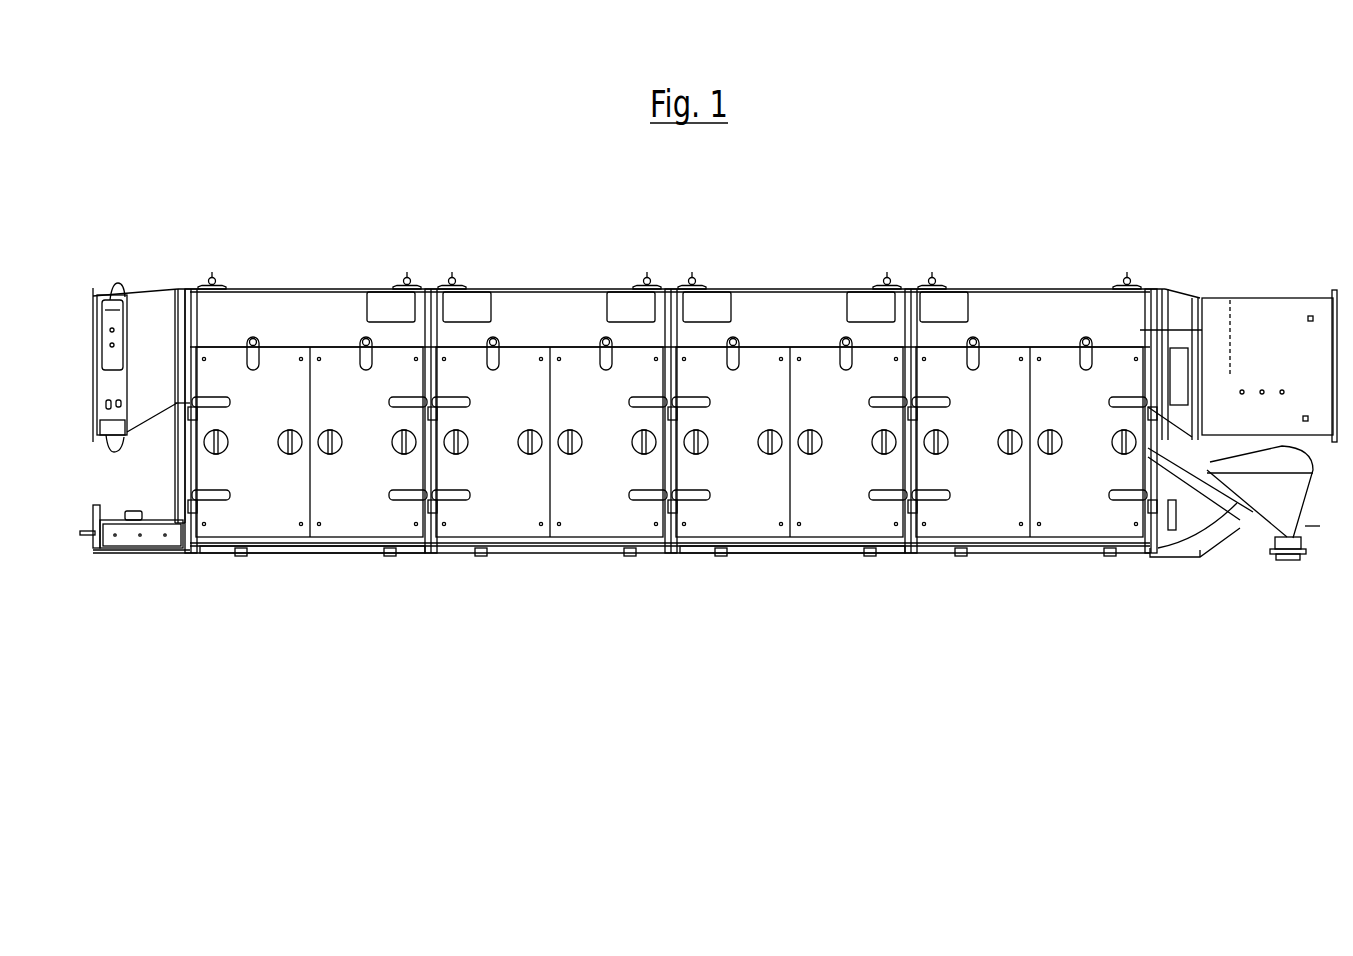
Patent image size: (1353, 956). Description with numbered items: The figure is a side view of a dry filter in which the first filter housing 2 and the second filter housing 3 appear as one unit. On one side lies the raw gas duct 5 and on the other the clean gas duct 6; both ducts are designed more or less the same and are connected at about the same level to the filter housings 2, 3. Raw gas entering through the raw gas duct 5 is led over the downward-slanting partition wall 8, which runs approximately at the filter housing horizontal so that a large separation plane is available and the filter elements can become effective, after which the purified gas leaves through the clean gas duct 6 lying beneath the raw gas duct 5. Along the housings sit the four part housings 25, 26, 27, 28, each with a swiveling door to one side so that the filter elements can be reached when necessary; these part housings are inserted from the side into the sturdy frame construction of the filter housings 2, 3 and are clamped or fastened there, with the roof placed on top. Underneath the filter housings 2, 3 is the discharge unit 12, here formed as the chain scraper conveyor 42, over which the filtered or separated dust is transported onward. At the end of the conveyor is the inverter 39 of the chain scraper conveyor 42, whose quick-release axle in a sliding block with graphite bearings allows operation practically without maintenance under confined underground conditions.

The first filter housing 2 is at (598, 535).
The second filter housing 3 is at (790, 480).
The raw gas duct 5 is at (147, 307).
The clean gas duct 6 is at (1278, 318).
The partition wall 8 is at (186, 300).
The discharge unit 12 is at (1207, 527).
The part housing 25 is at (308, 483).
The part housing 26 is at (548, 483).
The part housing 27 is at (815, 545).
The part housing 28 is at (1027, 483).
The inverter 39 is at (140, 535).
The chain scraper conveyor 42 is at (358, 550).